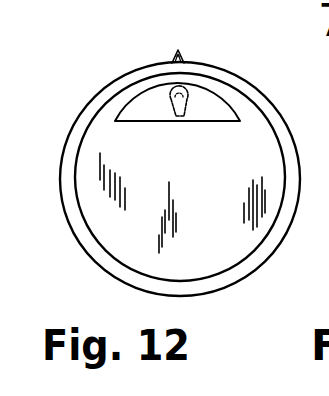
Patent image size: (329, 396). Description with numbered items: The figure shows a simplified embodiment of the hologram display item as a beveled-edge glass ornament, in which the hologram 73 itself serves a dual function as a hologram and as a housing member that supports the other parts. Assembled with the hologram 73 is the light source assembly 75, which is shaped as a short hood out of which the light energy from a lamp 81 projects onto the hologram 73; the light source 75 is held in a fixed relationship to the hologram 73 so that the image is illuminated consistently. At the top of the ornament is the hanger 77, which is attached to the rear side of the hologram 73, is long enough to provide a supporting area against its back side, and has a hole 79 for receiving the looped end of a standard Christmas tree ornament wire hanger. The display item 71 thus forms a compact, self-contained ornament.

The closure body 71 is at (222, 63).
The hologram 73 is at (265, 97).
The light source assembly 75 is at (127, 106).
The hanger 77 is at (174, 58).
The hole 79 is at (182, 60).
The lamp 81 is at (188, 97).